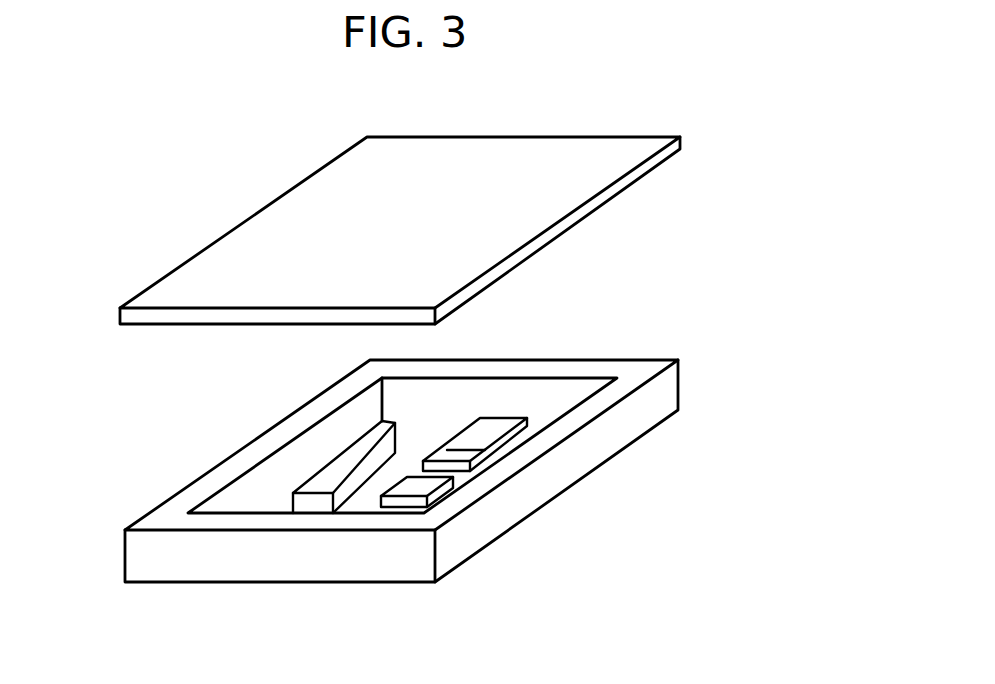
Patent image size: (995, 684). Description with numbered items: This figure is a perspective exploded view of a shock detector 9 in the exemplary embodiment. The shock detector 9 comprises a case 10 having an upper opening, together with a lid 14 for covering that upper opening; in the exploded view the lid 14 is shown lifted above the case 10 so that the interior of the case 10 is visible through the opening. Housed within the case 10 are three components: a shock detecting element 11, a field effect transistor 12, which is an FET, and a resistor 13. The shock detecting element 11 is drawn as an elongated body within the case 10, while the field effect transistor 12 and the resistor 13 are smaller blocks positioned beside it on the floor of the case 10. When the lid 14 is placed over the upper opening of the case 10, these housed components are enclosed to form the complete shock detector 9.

The shock detector 9 is at (637, 278).
The case 10 is at (158, 560).
The shock detecting element 11 is at (293, 505).
The field effect transistor 12 is at (425, 503).
The resistor 13 is at (468, 431).
The lid 14 is at (325, 213).